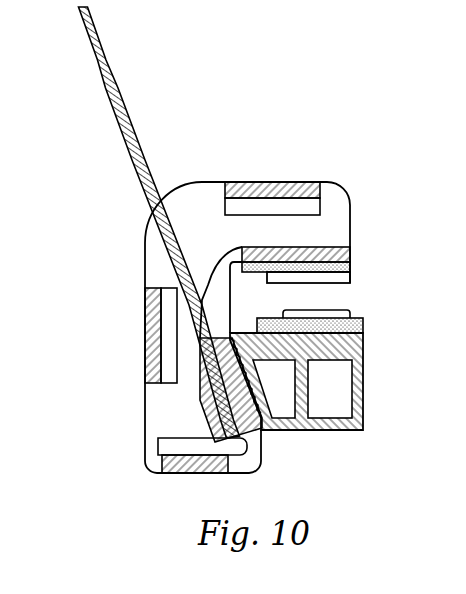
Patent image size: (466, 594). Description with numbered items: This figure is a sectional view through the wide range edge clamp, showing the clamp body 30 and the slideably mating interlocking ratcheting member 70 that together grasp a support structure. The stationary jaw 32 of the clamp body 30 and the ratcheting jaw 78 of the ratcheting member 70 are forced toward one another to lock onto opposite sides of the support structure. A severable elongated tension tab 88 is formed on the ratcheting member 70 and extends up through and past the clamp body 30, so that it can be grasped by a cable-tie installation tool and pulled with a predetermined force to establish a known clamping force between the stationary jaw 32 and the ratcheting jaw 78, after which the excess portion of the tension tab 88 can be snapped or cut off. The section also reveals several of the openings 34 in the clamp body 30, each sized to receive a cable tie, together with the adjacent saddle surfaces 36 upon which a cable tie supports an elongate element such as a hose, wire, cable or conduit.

The clamp body 30 is at (201, 181).
The stationary jaw 32 is at (351, 251).
The openings 34 is at (296, 207).
The saddle surfaces 36 is at (270, 192).
The ratcheting member 70 is at (330, 431).
The ratcheting jaw 78 is at (366, 326).
The tension tab 88 is at (117, 84).